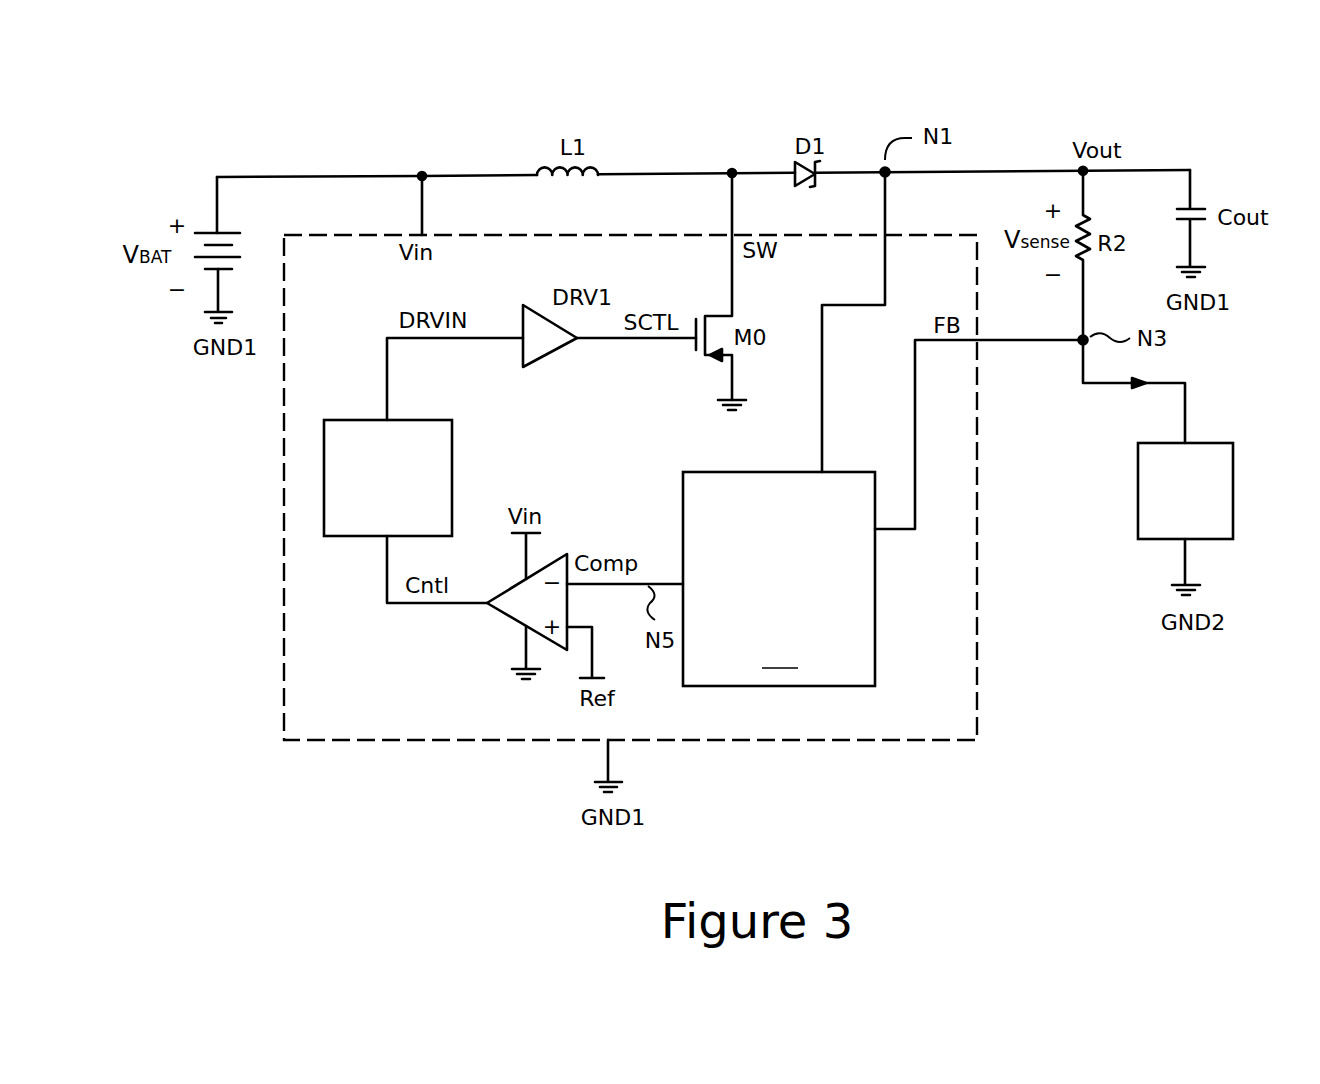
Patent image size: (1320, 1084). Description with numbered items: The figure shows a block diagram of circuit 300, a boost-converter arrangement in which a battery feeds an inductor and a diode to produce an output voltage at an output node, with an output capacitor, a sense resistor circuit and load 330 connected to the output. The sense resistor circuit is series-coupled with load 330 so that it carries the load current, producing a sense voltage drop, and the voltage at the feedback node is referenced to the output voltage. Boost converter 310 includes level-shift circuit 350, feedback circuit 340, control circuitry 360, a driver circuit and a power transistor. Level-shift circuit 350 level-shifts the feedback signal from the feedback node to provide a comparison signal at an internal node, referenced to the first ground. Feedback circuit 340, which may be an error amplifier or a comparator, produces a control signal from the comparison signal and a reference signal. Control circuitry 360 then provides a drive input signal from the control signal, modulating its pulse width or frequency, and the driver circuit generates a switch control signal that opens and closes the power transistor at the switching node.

The circuit 300 is at (678, 87).
The boost converter 310 is at (977, 705).
The load 330 is at (1168, 520).
The feedback circuit 340 is at (508, 616).
The level-shift circuit 350 is at (875, 620).
The control circuitry 360 is at (452, 438).